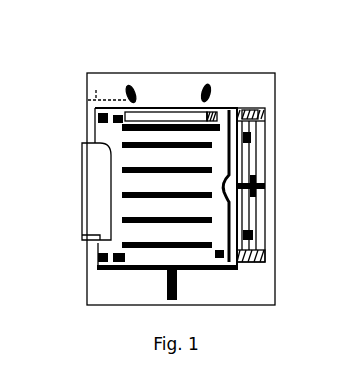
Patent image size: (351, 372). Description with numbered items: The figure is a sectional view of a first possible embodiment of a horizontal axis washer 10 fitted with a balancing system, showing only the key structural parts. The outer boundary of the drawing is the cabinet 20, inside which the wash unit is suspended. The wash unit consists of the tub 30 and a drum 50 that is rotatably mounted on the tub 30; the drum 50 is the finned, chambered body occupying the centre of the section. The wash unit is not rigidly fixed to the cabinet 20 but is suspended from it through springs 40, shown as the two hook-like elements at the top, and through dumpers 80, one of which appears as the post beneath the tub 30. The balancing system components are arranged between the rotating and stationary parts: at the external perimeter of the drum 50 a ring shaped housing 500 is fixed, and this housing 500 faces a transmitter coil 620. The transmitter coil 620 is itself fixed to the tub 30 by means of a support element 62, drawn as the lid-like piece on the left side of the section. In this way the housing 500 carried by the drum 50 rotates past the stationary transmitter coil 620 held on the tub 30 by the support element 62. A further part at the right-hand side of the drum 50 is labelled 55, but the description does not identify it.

The horizontal axis washer 10 is at (277, 59).
The cabinet 20 is at (239, 73).
The tub 30 is at (177, 106).
The springs 40 is at (131, 86).
The drum 50 is at (205, 182).
The connector bracket 55 is at (264, 186).
The support element 62 is at (95, 108).
The dumpers 80 is at (178, 292).
The ring shaped housing 500 is at (119, 113).
The transmitter coil 620 is at (107, 112).